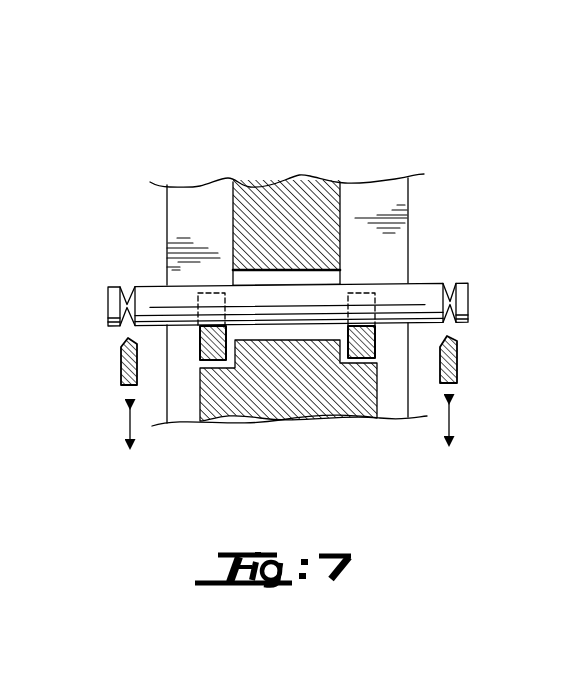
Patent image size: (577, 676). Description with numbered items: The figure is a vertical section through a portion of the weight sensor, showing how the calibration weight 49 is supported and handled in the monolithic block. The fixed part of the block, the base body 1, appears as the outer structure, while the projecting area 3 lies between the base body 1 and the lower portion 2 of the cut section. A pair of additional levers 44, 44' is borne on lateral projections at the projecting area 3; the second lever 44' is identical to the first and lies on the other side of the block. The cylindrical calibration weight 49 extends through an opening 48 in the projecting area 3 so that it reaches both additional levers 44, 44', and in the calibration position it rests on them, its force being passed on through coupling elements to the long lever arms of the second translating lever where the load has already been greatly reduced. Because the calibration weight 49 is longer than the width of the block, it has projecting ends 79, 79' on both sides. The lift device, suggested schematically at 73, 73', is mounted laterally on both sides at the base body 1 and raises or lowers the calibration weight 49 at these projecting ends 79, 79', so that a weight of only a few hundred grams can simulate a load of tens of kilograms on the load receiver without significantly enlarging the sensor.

The base body 1 is at (181, 209).
The lower bearing block 2 is at (300, 406).
The projecting area 3 is at (287, 191).
The additional lever 44 is at (382, 397).
The additional lever 44' is at (187, 397).
The opening 48 is at (327, 277).
The calibration weight 49 is at (148, 288).
The lift device 73 is at (483, 359).
The lift device 73' is at (91, 363).
The projecting end 79 is at (492, 302).
The projecting end 79' is at (82, 306).